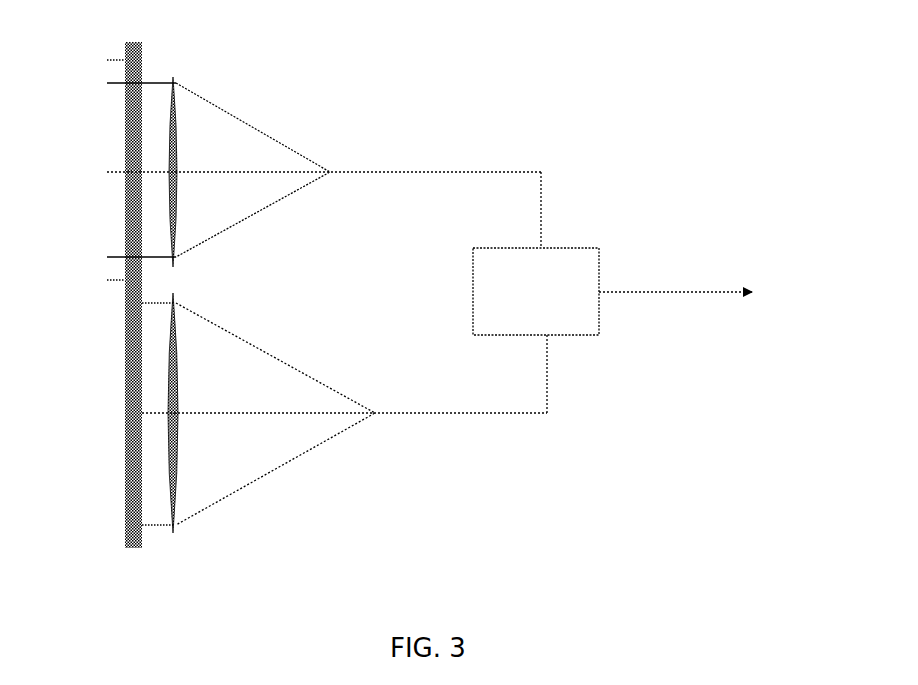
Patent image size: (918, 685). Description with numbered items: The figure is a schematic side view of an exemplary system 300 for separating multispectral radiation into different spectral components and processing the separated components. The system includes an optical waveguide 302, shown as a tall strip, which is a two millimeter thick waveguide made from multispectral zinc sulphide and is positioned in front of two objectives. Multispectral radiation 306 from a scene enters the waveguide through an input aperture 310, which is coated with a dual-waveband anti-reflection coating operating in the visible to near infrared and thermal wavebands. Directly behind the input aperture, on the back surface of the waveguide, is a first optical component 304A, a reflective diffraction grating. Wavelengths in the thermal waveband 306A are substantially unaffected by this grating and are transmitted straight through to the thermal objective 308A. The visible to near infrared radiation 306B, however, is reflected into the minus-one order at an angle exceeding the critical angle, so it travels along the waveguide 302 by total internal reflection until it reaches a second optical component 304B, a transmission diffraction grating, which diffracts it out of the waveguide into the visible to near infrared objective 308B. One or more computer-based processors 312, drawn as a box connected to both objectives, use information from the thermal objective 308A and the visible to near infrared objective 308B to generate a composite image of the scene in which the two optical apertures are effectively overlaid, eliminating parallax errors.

The imaging system 300 is at (710, 103).
The optical waveguide 302 is at (134, 547).
The first optical component 304A is at (139, 116).
The second optical component 304B is at (145, 485).
The multispectral radiation 306 is at (88, 168).
The thermal waveband radiation 306A is at (303, 146).
The visible to near infrared radiation 306B is at (326, 446).
The thermal objective 308A is at (180, 187).
The visible to near infrared objective 308B is at (181, 447).
The input aperture 310 is at (125, 187).
The one or more computer-based processors 312 is at (582, 338).